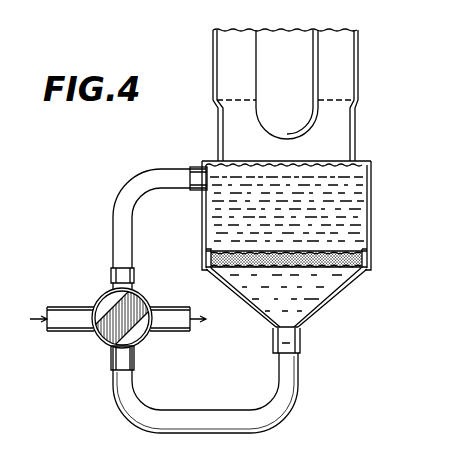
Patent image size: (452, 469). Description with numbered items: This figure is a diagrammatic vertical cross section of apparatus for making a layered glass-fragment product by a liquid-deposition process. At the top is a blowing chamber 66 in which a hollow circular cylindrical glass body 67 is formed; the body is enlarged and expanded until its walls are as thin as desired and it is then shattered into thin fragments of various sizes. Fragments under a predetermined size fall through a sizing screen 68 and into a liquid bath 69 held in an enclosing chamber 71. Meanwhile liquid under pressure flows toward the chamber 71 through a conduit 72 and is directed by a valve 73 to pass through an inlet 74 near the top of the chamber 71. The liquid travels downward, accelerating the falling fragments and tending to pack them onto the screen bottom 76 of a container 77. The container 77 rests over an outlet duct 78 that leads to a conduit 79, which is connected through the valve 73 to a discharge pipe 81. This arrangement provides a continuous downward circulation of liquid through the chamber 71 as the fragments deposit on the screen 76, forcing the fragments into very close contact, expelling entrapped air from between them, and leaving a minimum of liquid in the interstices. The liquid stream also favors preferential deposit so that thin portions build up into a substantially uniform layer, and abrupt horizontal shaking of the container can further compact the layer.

The blowing chamber 66 is at (213, 66).
The hollow circular cylindrical glass body 67 is at (315, 65).
The sizing screen 68 is at (332, 162).
The liquid bath 69 is at (352, 213).
The enclosing chamber 71 is at (372, 248).
The conduit 72 is at (60, 312).
The valve 73 is at (107, 336).
The inlet 74 is at (175, 170).
The screen bottom 76 is at (342, 264).
The container 77 is at (369, 263).
The outlet duct 78 is at (320, 311).
The conduit 79 is at (205, 411).
The discharge pipe 81 is at (176, 322).